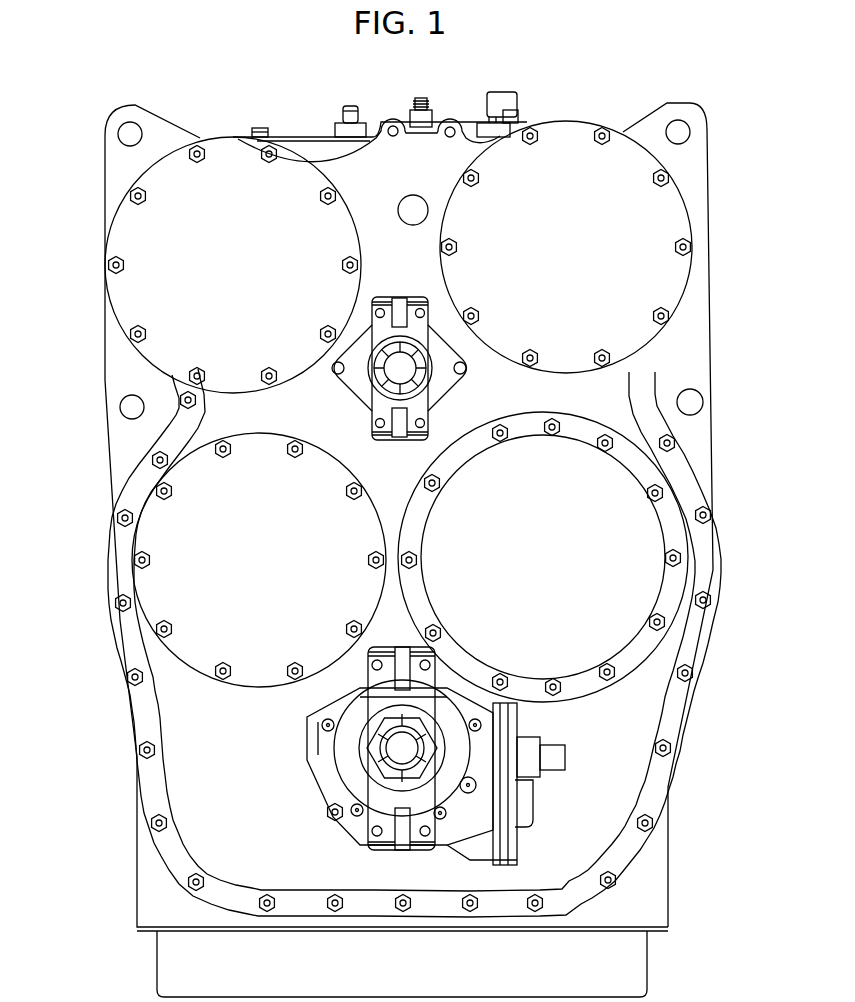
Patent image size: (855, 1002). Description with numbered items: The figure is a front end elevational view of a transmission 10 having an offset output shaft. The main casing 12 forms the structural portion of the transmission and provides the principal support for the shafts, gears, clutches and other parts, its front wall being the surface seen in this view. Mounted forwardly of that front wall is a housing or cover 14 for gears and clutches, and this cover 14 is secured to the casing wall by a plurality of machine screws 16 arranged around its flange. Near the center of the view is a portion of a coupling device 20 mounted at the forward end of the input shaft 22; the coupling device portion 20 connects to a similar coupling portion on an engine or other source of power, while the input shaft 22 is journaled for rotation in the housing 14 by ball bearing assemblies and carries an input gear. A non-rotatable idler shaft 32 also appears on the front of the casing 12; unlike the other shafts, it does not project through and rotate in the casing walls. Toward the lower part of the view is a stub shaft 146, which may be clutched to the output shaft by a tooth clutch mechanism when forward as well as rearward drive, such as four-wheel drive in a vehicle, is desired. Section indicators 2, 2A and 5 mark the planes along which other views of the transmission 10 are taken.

The transmission 10 is at (310, 122).
The main casing 12 is at (713, 318).
The housing or cover 14 is at (227, 417).
The machine screws 16 is at (113, 598).
The coupling device portion 20 is at (413, 412).
The input shaft 22 is at (378, 375).
The idler shaft 32 is at (400, 200).
The stub shaft 146 is at (388, 757).
The section line 2 is at (417, 945).
The section line 2A is at (412, 245).
The section line 5 is at (275, 708).